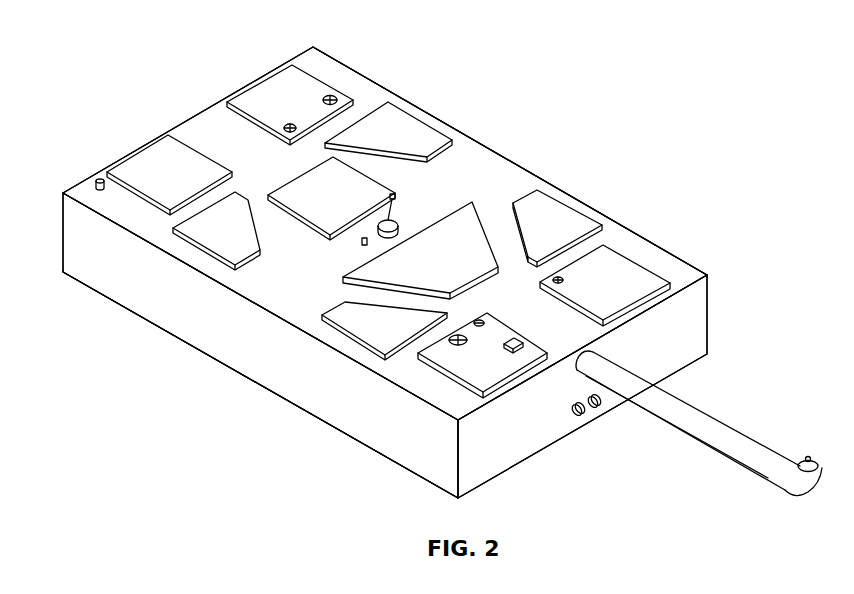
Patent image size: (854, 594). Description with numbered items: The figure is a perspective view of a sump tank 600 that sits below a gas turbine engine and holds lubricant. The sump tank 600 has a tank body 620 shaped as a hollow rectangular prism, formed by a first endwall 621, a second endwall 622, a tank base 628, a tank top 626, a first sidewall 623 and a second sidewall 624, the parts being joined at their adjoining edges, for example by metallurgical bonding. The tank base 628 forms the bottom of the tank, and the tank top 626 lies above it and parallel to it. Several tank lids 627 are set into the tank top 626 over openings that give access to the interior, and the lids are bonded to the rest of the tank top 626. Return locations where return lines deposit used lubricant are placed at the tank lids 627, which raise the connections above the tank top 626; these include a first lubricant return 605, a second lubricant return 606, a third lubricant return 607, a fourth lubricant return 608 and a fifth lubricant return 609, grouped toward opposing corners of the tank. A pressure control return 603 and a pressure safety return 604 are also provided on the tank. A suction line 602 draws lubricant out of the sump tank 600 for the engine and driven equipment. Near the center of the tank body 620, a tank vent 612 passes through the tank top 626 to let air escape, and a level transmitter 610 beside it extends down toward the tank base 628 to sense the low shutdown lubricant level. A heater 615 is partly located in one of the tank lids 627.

The sump tank 600 is at (669, 66).
The suction lines 602 is at (722, 440).
The pressure control return 603 is at (600, 405).
The pressure safety return 604 is at (583, 416).
The first lubricant return 605 is at (455, 334).
The second lubricant return 606 is at (477, 319).
The third lubricant return 607 is at (561, 276).
The fourth lubricant return 608 is at (333, 96).
The fifth lubricant return 609 is at (285, 125).
The level transmitter 610 is at (362, 240).
The tank vent 612 is at (394, 196).
The heater 615 is at (519, 342).
The tank body 620 is at (283, 322).
The first endwall 621 is at (713, 315).
The second endwall 622 is at (95, 180).
The first sidewall 623 is at (682, 257).
The second sidewall 624 is at (166, 311).
The tank top 626 is at (473, 178).
The tank lids 627 is at (165, 153).
The tank base 628 is at (356, 443).